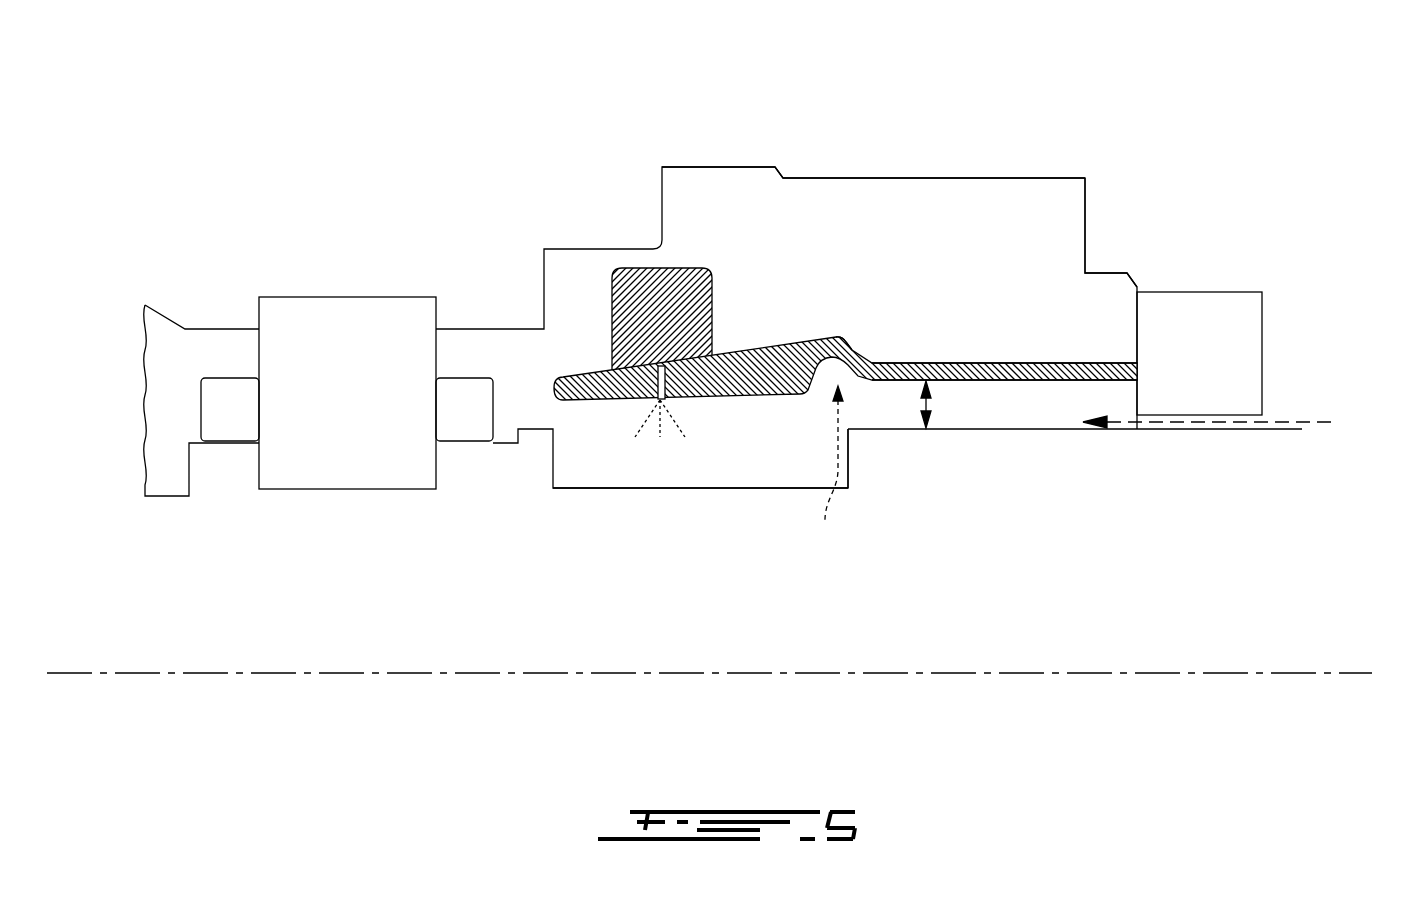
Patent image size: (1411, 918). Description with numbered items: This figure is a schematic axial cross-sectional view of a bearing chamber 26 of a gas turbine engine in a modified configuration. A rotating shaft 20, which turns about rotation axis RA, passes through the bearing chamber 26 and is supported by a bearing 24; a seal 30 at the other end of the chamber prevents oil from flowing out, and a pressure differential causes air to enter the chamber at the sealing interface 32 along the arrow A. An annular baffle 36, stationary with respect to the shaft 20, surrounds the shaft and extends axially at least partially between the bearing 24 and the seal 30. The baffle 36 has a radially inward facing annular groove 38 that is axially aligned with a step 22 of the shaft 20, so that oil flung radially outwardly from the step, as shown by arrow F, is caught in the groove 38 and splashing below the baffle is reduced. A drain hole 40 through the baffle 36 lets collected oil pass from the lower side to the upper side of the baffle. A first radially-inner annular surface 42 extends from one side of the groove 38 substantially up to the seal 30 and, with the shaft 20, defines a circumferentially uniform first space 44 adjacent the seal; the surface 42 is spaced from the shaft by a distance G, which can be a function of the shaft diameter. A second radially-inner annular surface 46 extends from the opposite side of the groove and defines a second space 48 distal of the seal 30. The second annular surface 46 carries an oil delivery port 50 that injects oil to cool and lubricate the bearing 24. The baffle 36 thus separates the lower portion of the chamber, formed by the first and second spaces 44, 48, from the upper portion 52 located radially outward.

The shaft 20 is at (1077, 430).
The step 22 is at (848, 453).
The bearing 24 is at (338, 337).
The bearing chamber 26 is at (988, 220).
The seal 30 is at (1207, 333).
The sealing interface 32 is at (1280, 398).
The baffle 36 is at (827, 260).
The annular groove 38 is at (842, 366).
The drain hole 40 is at (850, 343).
The first radially-inner annular surface 42 is at (983, 380).
The first space 44 is at (1027, 410).
The second radially-inner annular surface 46 is at (727, 395).
The second space 48 is at (752, 470).
The oil delivery port 50 is at (622, 400).
The upper portion 52 is at (1043, 222).
The arrow F is at (827, 470).
The distance G is at (930, 405).
The arrow A is at (1150, 430).
The rotation axis RA is at (1205, 673).